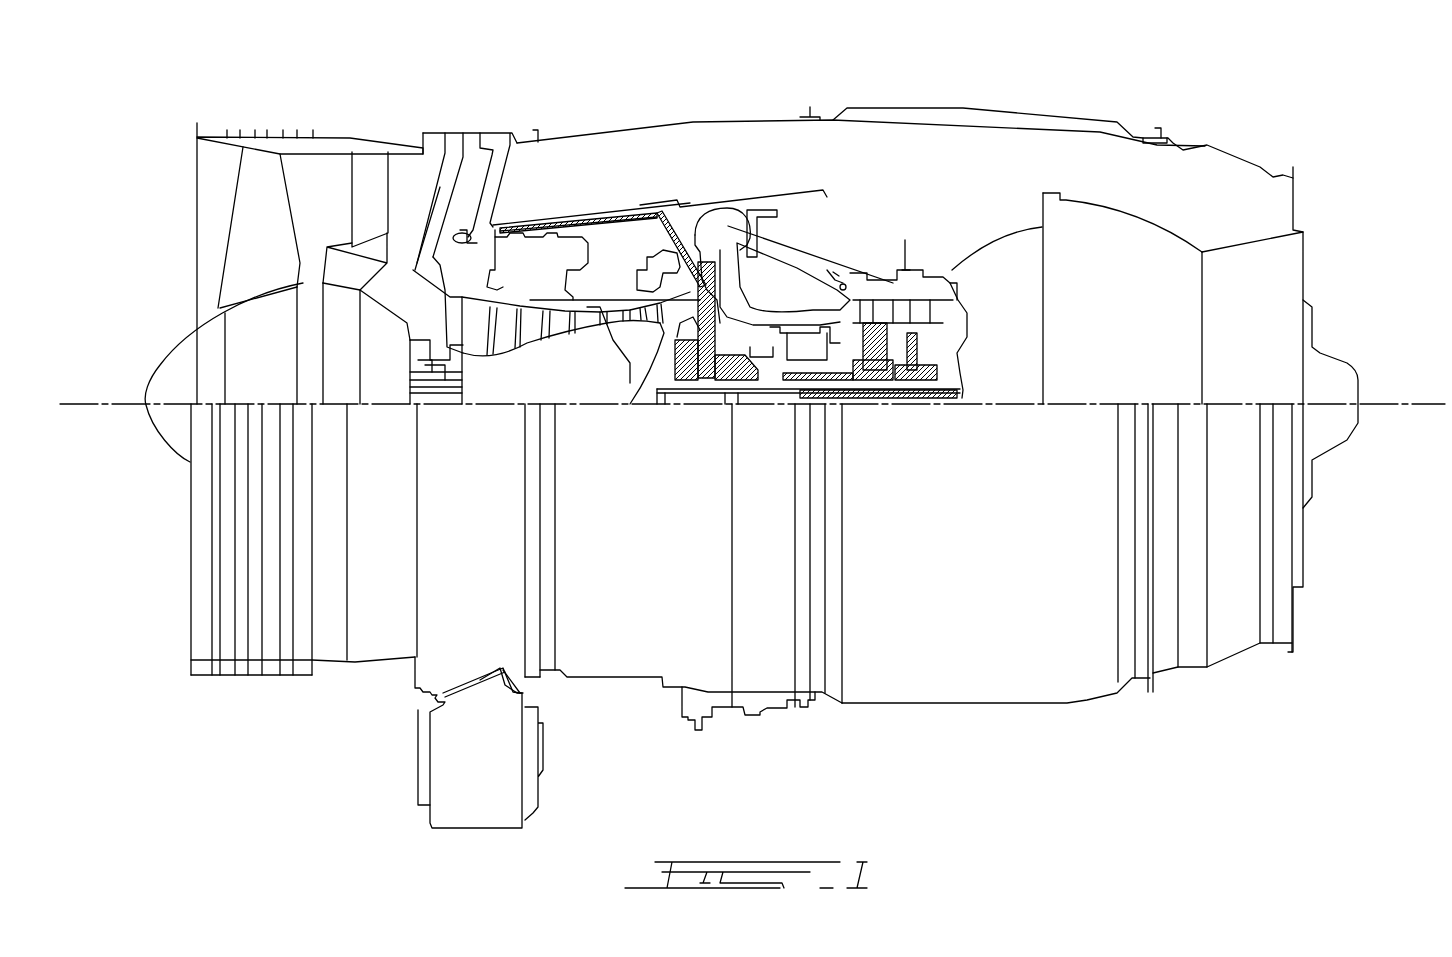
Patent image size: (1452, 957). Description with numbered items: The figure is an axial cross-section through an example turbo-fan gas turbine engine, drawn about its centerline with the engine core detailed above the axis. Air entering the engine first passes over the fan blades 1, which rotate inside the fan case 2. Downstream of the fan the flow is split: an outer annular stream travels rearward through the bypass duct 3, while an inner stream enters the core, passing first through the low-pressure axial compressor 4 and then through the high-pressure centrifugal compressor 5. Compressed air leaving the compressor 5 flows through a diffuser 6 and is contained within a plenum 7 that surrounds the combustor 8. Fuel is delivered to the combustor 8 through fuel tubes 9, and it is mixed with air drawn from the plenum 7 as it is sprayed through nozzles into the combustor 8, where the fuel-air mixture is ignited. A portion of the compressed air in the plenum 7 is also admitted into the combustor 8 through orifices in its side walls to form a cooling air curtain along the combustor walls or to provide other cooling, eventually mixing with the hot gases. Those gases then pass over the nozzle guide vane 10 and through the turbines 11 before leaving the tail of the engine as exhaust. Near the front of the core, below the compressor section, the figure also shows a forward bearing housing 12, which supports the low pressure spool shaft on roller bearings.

The fan blades 1 is at (267, 250).
The fan case 2 is at (325, 137).
The bypass duct 3 is at (605, 186).
The low-pressure axial compressor 4 is at (507, 342).
The high-pressure centrifugal compressor 5 is at (670, 330).
The diffuser 6 is at (727, 227).
The plenum 7 is at (773, 300).
The combustor 8 is at (779, 305).
The fuel tubes 9 is at (800, 270).
The nozzle guide vane 10 is at (860, 283).
The turbines 11 is at (873, 303).
The forward bearing housing 12 is at (433, 396).